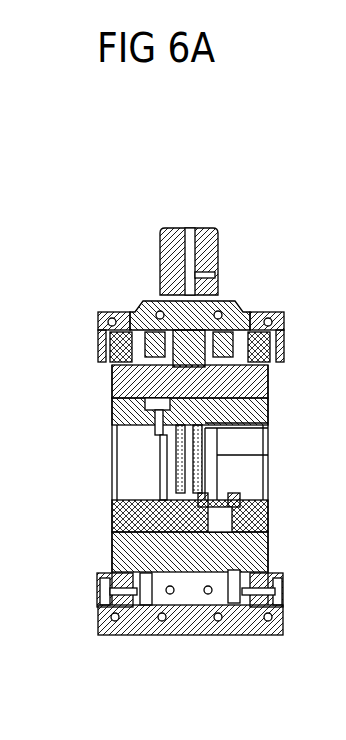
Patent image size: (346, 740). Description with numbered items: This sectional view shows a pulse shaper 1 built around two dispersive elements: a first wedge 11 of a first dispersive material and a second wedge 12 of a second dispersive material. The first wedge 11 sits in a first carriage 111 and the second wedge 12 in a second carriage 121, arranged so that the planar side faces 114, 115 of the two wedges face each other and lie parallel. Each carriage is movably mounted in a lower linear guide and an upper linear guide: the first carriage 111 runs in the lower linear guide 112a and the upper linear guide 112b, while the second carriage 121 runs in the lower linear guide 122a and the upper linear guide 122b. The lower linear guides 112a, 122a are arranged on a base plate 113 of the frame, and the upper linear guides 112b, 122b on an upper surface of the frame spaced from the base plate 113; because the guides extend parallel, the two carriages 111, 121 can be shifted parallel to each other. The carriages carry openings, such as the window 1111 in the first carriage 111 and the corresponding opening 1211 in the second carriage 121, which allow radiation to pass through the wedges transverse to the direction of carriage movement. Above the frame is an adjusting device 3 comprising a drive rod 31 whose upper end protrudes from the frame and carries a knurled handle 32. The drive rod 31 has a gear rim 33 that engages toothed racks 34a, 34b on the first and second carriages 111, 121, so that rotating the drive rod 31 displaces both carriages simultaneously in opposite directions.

The pulse shaper 1 is at (108, 265).
The adjusting device 3 is at (218, 213).
The knurled handle 32 is at (162, 257).
The drive rod 31 is at (217, 275).
The gear rim 33 is at (222, 307).
The upper linear guide 112b is at (102, 317).
The upper linear guide 122b is at (282, 312).
The toothed rack 34a is at (110, 360).
The toothed rack 34b is at (260, 363).
The opening 1111 is at (115, 435).
The first wedge 11 is at (167, 478).
The planar side face 114 is at (178, 457).
The planar side face 115 is at (218, 470).
The upper chamber boundary 1211 is at (262, 433).
The second wedge 12 is at (265, 460).
The first carriage 111 is at (112, 515).
The second carriage 121 is at (265, 510).
The lower linear guide 112a is at (117, 557).
The lower linear guide 122a is at (267, 553).
The base plate 113 is at (198, 635).